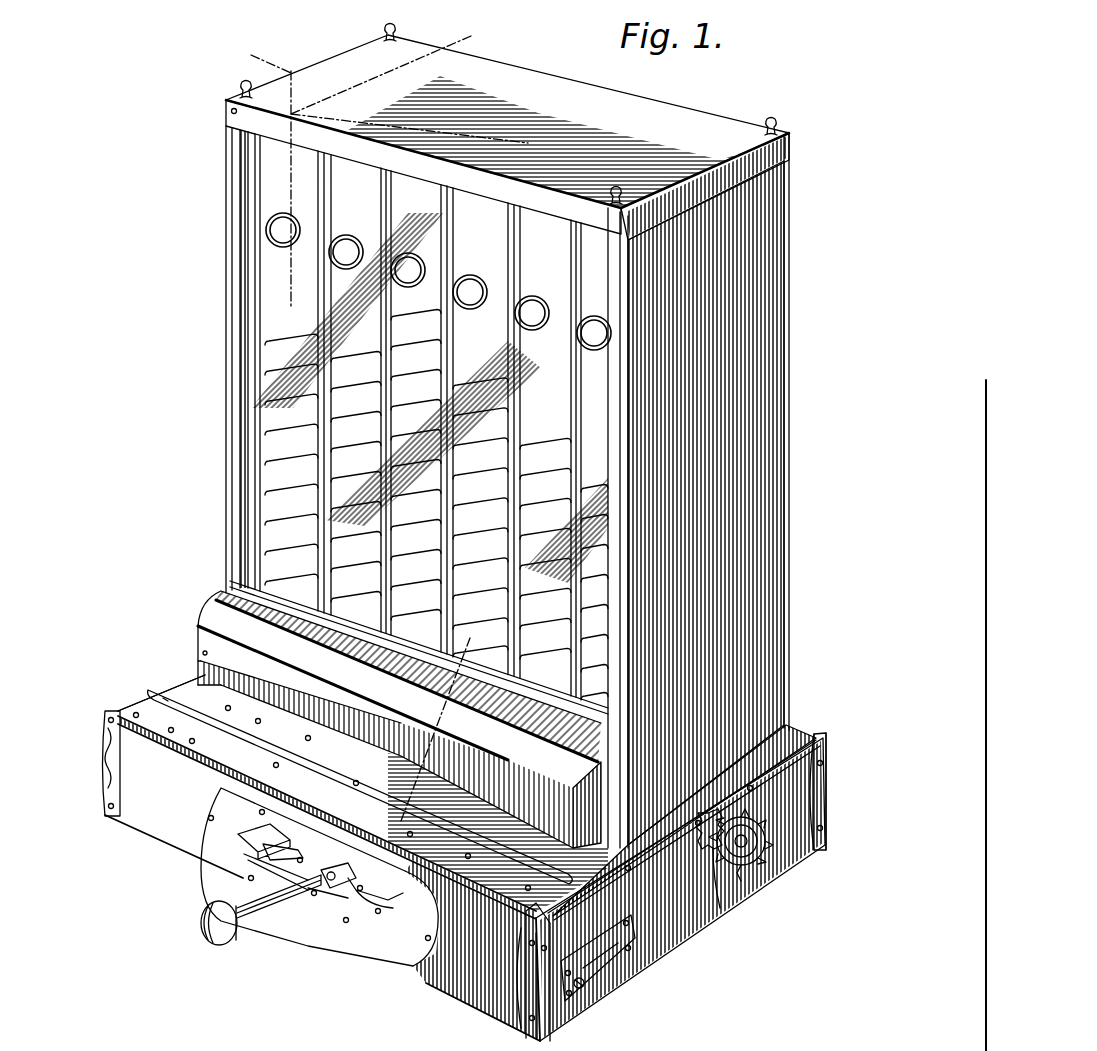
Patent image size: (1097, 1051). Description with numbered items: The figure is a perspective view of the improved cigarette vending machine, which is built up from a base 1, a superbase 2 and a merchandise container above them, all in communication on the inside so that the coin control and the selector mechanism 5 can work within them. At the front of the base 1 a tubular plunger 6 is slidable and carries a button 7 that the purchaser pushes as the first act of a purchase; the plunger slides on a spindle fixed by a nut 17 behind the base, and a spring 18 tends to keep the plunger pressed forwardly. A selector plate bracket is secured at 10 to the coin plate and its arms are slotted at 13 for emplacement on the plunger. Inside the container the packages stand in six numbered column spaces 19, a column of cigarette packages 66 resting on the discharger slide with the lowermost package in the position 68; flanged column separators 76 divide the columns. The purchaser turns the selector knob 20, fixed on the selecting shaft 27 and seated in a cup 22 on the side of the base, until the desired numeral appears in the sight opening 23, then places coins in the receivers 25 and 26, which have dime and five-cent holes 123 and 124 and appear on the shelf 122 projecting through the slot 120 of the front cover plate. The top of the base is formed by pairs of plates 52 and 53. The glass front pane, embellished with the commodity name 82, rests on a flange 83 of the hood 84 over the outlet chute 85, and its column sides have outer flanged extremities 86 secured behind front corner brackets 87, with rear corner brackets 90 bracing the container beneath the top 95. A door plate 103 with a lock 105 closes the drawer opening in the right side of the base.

The base 1 is at (142, 818).
The superbase 2 is at (150, 943).
The selector mechanism 5 is at (214, 430).
The tubular plunger 6 is at (262, 912).
The button 7 is at (213, 930).
The securing point 10 is at (262, 838).
The slots 13 is at (97, 760).
The nut 17 is at (381, 161).
The spring 18 is at (390, 101).
The column spaces 19 is at (264, 317).
The selector knob 20 is at (738, 865).
The cup 22 is at (703, 806).
The sight opening 23 is at (712, 905).
The coin receiver 25 is at (313, 868).
The coin receiver 26 is at (338, 882).
The selecting shaft 27 is at (745, 855).
The plates 52 is at (150, 690).
The plates 53 is at (222, 752).
The column of cigarette packages 66 is at (466, 488).
The lowermost package position 68 is at (724, 405).
The column separators 76 is at (378, 386).
The commodity name 82 is at (263, 200).
The flange 83 is at (222, 576).
The hood 84 is at (378, 708).
The outlet chute 85 is at (193, 664).
The outer flanged extremities 86 is at (236, 275).
The front corner brackets 87 is at (226, 371).
The rear corner brackets 90 is at (782, 470).
The top 95 is at (668, 116).
The door plate 103 is at (612, 975).
The lock 105 is at (572, 985).
The slot 120 is at (319, 877).
The shelf 122 is at (232, 838).
The dime hole 123 is at (262, 843).
The five-cent hole 124 is at (323, 878).